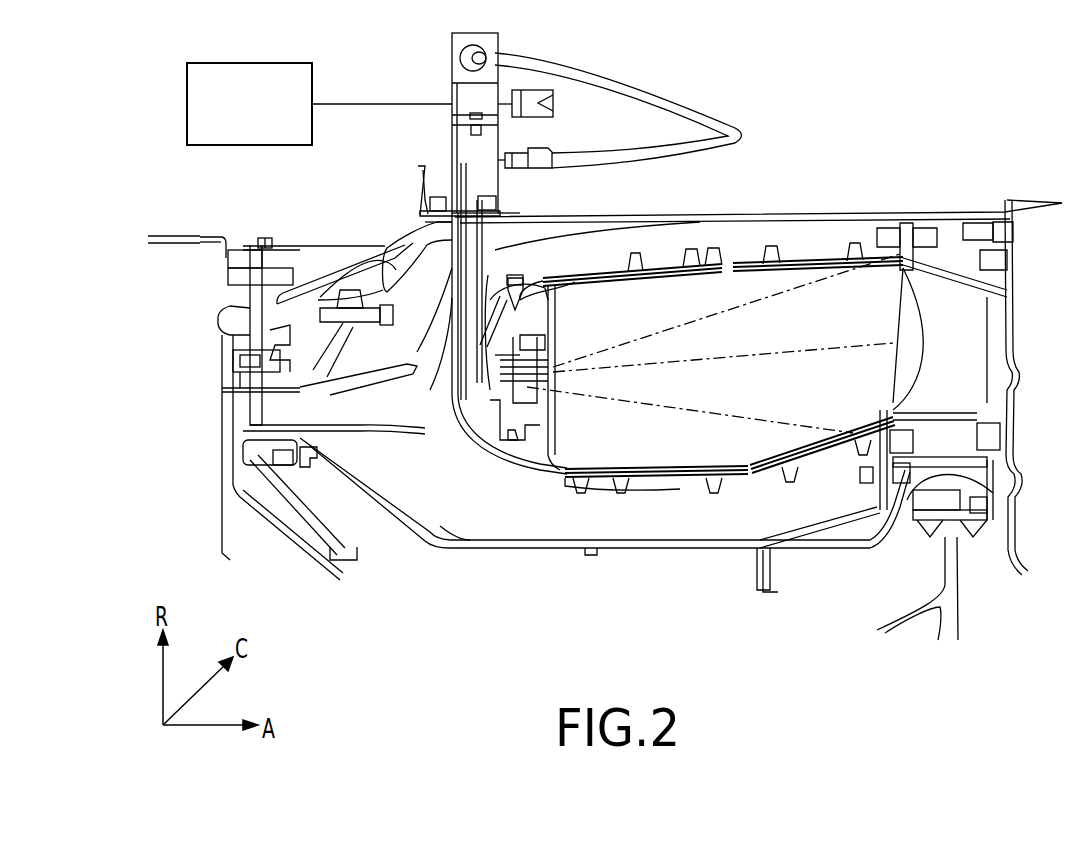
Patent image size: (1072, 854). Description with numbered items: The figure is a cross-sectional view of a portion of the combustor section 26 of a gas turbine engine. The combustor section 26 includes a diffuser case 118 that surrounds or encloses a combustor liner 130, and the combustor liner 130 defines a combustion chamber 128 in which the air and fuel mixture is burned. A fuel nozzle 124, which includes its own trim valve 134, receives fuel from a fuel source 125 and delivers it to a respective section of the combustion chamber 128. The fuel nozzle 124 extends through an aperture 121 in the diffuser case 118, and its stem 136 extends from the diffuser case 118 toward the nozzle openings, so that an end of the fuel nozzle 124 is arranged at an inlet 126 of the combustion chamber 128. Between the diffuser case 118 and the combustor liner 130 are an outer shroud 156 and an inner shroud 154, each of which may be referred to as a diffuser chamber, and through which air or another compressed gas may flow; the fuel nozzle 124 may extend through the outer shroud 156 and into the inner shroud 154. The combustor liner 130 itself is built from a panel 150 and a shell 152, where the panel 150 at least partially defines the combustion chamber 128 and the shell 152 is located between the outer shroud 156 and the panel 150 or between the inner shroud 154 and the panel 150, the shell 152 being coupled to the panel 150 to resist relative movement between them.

The combustor section 26 is at (808, 66).
The diffuser case 118 is at (758, 217).
The aperture 121 is at (494, 233).
The fuel nozzle 124 is at (453, 440).
The fuel source 125 is at (258, 114).
The inlet 126 is at (527, 372).
The combustion chamber 128 is at (770, 342).
The combustor liner 130 is at (666, 278).
The trim valve 134 is at (456, 84).
The stem 136 is at (450, 387).
The panel 150 is at (668, 470).
The shell 152 is at (662, 478).
The inner shroud 154 is at (677, 549).
The outer shroud 156 is at (673, 283).